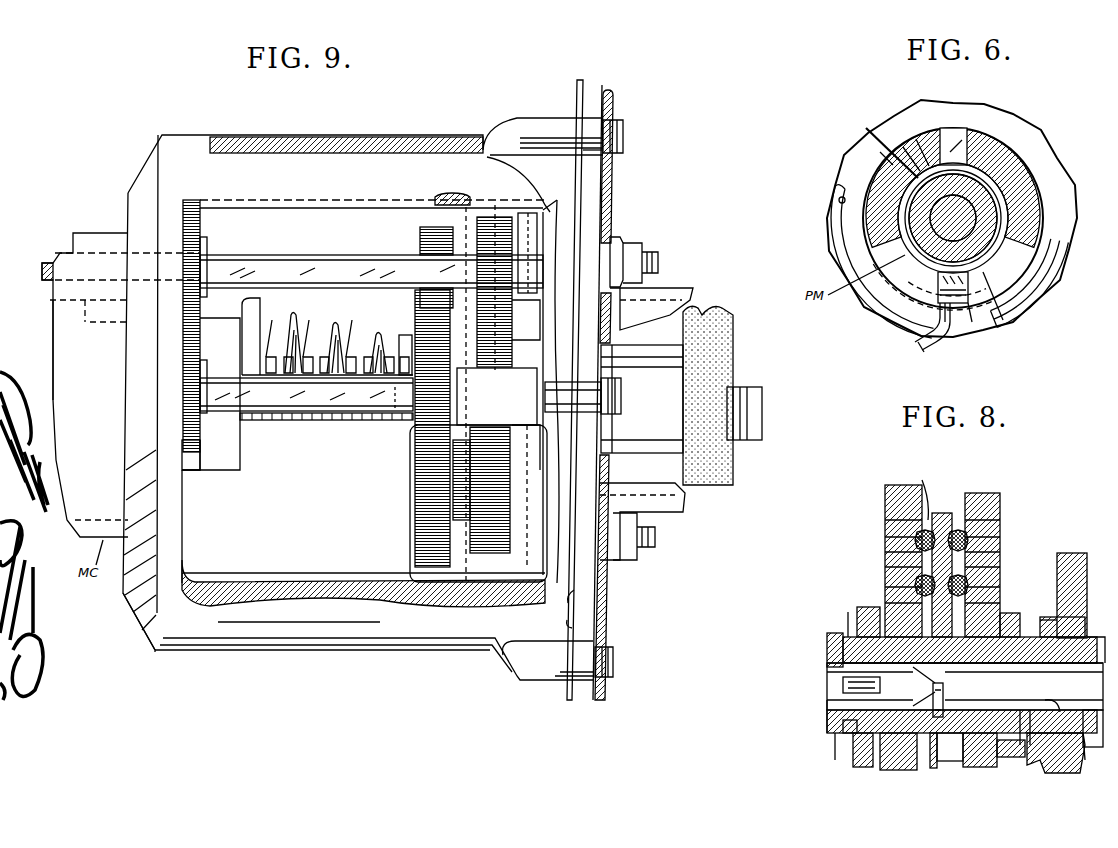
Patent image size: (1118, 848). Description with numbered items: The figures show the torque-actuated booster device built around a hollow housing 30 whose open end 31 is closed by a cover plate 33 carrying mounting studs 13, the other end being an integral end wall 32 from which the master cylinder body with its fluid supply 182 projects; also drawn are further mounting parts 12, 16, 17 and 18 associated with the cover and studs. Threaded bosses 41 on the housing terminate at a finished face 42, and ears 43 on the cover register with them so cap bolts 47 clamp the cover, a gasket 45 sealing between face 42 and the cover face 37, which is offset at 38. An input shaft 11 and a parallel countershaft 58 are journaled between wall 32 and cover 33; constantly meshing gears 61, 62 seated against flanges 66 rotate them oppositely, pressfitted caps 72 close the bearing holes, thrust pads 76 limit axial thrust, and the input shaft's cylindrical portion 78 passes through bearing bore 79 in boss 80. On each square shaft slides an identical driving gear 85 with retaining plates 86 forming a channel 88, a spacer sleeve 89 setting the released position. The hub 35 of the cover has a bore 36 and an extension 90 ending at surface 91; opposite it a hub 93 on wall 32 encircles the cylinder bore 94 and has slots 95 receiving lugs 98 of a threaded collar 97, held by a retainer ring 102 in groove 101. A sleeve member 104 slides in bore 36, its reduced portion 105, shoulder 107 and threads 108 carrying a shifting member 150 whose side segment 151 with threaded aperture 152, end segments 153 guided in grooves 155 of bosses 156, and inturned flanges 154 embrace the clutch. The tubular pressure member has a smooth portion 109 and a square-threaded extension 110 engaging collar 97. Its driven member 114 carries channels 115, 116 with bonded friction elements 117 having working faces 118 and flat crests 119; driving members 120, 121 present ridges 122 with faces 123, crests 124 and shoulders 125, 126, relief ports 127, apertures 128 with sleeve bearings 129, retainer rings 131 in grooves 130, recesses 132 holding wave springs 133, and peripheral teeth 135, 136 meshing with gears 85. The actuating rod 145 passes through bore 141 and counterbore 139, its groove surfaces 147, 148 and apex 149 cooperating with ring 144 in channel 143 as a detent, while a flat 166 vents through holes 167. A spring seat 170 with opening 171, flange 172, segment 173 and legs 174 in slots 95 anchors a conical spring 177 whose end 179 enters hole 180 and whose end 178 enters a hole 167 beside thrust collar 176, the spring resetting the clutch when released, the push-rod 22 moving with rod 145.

In FIG. 9, the input shaft 11 is at (334, 255).
In FIG. 9, the frame bar 12 is at (614, 100).
In FIG. 9, the mounting studs 13 is at (659, 262).
In FIG. 9, the bracket 16 is at (624, 245).
In FIG. 9, the bracket 17 is at (684, 288).
In FIG. 9, the bracket 18 is at (625, 560).
In FIG. 9, the push-rod 22 is at (750, 440).
In FIG. 9, the housing 30 is at (372, 135).
In FIG. 9, the open end 31 is at (580, 602).
In FIG. 9, the end wall 32 is at (123, 600).
In FIG. 6, the end wall 32 is at (1065, 183).
In FIG. 9, the cover plate 33 is at (601, 200).
In FIG. 8, the cover plate 33 is at (1080, 553).
In FIG. 9, the hub 35 is at (655, 453).
In FIG. 8, the hub 35 is at (1087, 630).
In FIG. 8, the longitudinal bore 36 is at (1087, 615).
In FIG. 9, the circular finished face 37 is at (590, 628).
In FIG. 9, the offset 38 is at (577, 125).
In FIG. 9, the hollow bosses 41 is at (530, 120).
In FIG. 9, the circular finished face 42 is at (585, 170).
In FIG. 9, the ears 43 is at (580, 118).
In FIG. 9, the gasket 45 is at (572, 612).
In FIG. 9, the cap bolts 47 is at (624, 138).
In FIG. 9, the countershaft 58 is at (225, 404).
In FIG. 9, the gear 61 is at (201, 218).
In FIG. 9, the gear 62 is at (200, 440).
In FIG. 9, the circular flange 66 is at (208, 248).
In FIG. 9, the pressfitted cap 72 is at (620, 288).
In FIG. 9, the thrust pads 76 is at (532, 300).
In FIG. 9, the elongated cylindrical portion 78 is at (45, 263).
In FIG. 9, the bearing bore 79 is at (97, 253).
In FIG. 9, the boss 80 is at (88, 312).
In FIG. 9, the driving gear 85 is at (475, 210).
In FIG. 9, the retaining plate 86 is at (495, 215).
In FIG. 9, the channel 88 is at (490, 210).
In FIG. 9, the spacer sleeve 89 is at (552, 222).
In FIG. 9, the hub extension 90 is at (536, 445).
In FIG. 8, the hub extension 90 is at (1040, 755).
In FIG. 9, the finished end surface 91 is at (570, 391).
In FIG. 8, the finished end surface 91 is at (1010, 757).
In FIG. 6, the hub 93 is at (1032, 170).
In FIG. 6, the cylindrical bore 94 is at (1003, 225).
In FIG. 6, the slots 95 is at (967, 135).
In FIG. 6, the threaded collar 97 is at (866, 128).
In FIG. 6, the lugs 98 is at (990, 152).
In FIG. 6, the internal annular groove 101 is at (918, 145).
In FIG. 6, the split expansible retainer ring 102 is at (1005, 310).
In FIG. 9, the sleeve member 104 is at (735, 372).
In FIG. 8, the reduced diameter portion 105 is at (828, 718).
In FIG. 8, the external annular shoulder 107 is at (1065, 548).
In FIG. 8, the externally threaded portion 108 is at (1015, 613).
In FIG. 8, the smooth diameter portion 109 is at (843, 728).
In FIG. 9, the threaded extension 110 is at (338, 400).
In FIG. 6, the threaded extension 110 is at (905, 280).
In FIG. 9, the driven member 114 is at (416, 543).
In FIG. 8, the driven member 114 is at (950, 513).
In FIG. 9, the circular channel 115 is at (416, 462).
In FIG. 8, the circular channel 115 is at (975, 500).
In FIG. 8, the circular channel 116 is at (900, 558).
In FIG. 9, the friction element 117 is at (416, 505).
In FIG. 8, the friction element 117 is at (985, 510).
In FIG. 9, the working faces 118 is at (465, 520).
In FIG. 8, the working faces 118 is at (925, 490).
In FIG. 8, the flat surface 119 is at (915, 535).
In FIG. 9, the driving member 120 is at (507, 512).
In FIG. 8, the driving member 120 is at (1000, 545).
In FIG. 9, the driving member 121 is at (418, 232).
In FIG. 8, the driving member 121 is at (883, 495).
In FIG. 8, the friction ridge 122 is at (985, 565).
In FIG. 8, the working faces 123 is at (885, 568).
In FIG. 8, the flat surface 124 is at (915, 582).
In FIG. 8, the working shoulder 125 is at (900, 600).
In FIG. 8, the working shoulder 126 is at (900, 518).
In FIG. 8, the relief ports 127 is at (885, 540).
In FIG. 8, the circular apertures 128 is at (853, 745).
In FIG. 8, the sleeve bearing 129 is at (857, 620).
In FIG. 8, the external annular groove 130 is at (828, 650).
In FIG. 8, the split contractible retainer ring 131 is at (828, 636).
In FIG. 8, the circular recess 132 is at (1000, 585).
In FIG. 8, the wave-type spring 133 is at (985, 605).
In FIG. 9, the gear teeth 135 is at (505, 488).
In FIG. 8, the gear teeth 135 is at (985, 493).
In FIG. 9, the gear teeth 136 is at (416, 520).
In FIG. 8, the gear teeth 136 is at (885, 480).
In FIG. 8, the counterbore 139 is at (1100, 734).
In FIG. 8, the longitudinal bore 141 is at (828, 666).
In FIG. 8, the internal annular channel 143 is at (942, 760).
In FIG. 8, the split contractible metallic ring 144 is at (945, 675).
In FIG. 6, the actuating rod 145 is at (935, 222).
In FIG. 8, the actuating rod 145 is at (1067, 674).
In FIG. 8, the working surface 147 is at (920, 672).
In FIG. 8, the working surface 148 is at (948, 692).
In FIG. 8, the apex 149 is at (920, 695).
In FIG. 9, the shifting member 150 is at (525, 565).
In FIG. 9, the side segment 151 is at (537, 215).
In FIG. 8, the side segment 151 is at (1085, 758).
In FIG. 8, the threaded aperture 152 is at (1023, 705).
In FIG. 9, the end segments 153 is at (418, 248).
In FIG. 8, the end segments 153 is at (1050, 712).
In FIG. 9, the inturned flanges 154 is at (418, 210).
In FIG. 8, the inturned flanges 154 is at (861, 677).
In FIG. 9, the flat bottom grooves 155 is at (282, 207).
In FIG. 9, the elongated bosses 156 is at (320, 200).
In FIG. 8, the flat 166 is at (827, 683).
In FIG. 8, the holes 167 is at (827, 705).
In FIG. 9, the spring seat 170 is at (222, 475).
In FIG. 6, the spring seat 170 is at (975, 330).
In FIG. 6, the central opening 171 is at (878, 154).
In FIG. 9, the outturned flange 172 is at (232, 480).
In FIG. 6, the outturned flange 172 is at (1055, 258).
In FIG. 9, the circular segment 173 is at (260, 310).
In FIG. 6, the circular segment 173 is at (1040, 300).
In FIG. 6, the legs 174 is at (951, 330).
In FIG. 9, the thrust collar 176 is at (405, 335).
In FIG. 8, the thrust collar 176 is at (835, 755).
In FIG. 9, the conical spring 177 is at (298, 395).
In FIG. 6, the conical spring 177 is at (842, 262).
In FIG. 9, the end 178 is at (350, 335).
In FIG. 8, the end 178 is at (843, 642).
In FIG. 6, the end 179 is at (940, 335).
In FIG. 6, the hole 180 is at (918, 348).
In FIG. 9, the fluid supply 182 is at (52, 320).